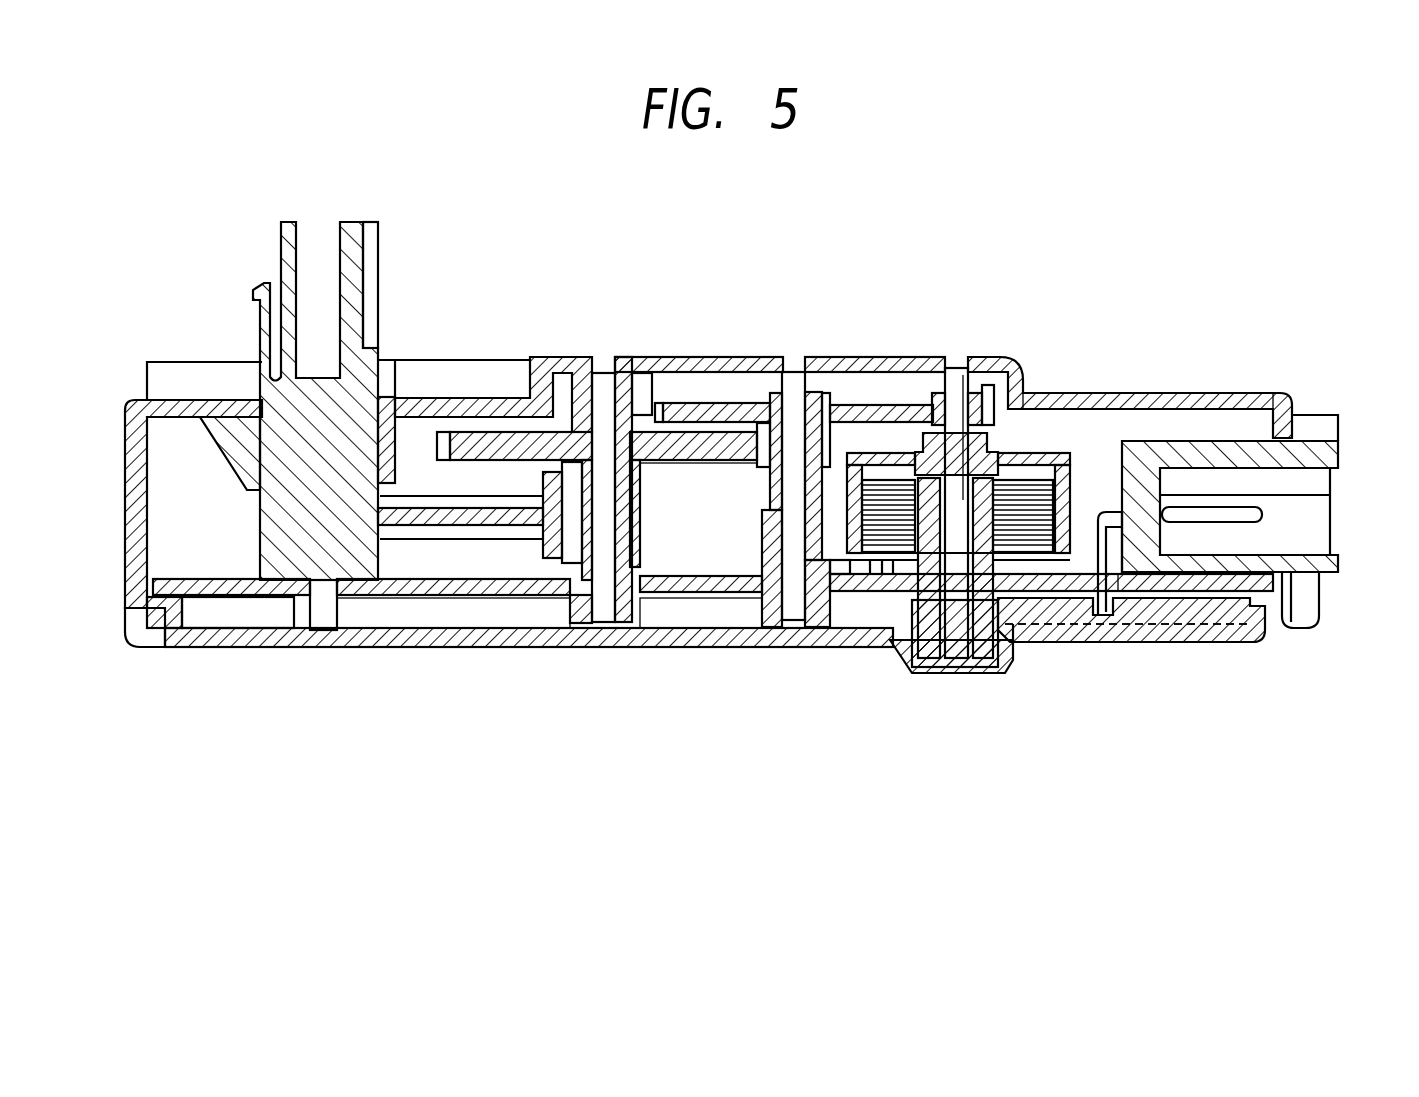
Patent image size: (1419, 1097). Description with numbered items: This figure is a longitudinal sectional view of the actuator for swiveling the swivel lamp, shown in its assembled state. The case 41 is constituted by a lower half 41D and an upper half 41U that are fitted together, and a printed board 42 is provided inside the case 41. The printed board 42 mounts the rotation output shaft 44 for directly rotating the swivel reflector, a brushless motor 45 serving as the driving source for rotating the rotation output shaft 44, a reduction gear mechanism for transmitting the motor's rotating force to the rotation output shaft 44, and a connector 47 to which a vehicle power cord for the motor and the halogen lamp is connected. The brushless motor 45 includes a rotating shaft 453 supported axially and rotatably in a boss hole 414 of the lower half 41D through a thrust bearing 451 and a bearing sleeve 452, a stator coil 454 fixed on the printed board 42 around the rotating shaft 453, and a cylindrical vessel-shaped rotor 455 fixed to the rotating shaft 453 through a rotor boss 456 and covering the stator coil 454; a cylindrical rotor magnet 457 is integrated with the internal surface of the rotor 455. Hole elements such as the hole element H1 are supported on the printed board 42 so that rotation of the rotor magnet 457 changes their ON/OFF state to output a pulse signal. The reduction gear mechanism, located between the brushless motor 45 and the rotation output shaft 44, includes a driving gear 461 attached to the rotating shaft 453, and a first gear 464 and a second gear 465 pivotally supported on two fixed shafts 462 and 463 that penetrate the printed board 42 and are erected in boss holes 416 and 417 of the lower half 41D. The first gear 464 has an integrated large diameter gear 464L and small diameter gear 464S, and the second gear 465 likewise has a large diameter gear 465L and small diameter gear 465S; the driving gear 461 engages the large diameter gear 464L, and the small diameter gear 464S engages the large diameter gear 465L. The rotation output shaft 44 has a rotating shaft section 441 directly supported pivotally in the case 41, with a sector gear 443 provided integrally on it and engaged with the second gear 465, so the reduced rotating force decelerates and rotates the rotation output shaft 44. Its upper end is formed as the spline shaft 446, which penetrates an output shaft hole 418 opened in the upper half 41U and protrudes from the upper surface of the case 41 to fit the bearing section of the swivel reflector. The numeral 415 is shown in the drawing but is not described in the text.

The case 41 is at (1300, 380).
The upper half 41U is at (1212, 392).
The lower half 41D is at (1262, 645).
The printed board 42 is at (690, 647).
The rotation output shaft 44 is at (268, 246).
The brushless motor 45 is at (1016, 518).
The connector 47 is at (1327, 452).
The boss hole 414 is at (897, 647).
The opening 415 is at (290, 647).
The boss hole 416 is at (758, 647).
The boss hole 417 is at (557, 647).
The output shaft hole 418 is at (386, 400).
The rotating shaft section 441 is at (265, 378).
The sector gear 443 is at (595, 366).
The spline shaft 446 is at (372, 285).
The thrust bearing 451 is at (972, 673).
The bearing sleeve 452 is at (1012, 655).
The rotating shaft 453 is at (948, 660).
The stator coil 454 is at (1141, 475).
The rotor 455 is at (925, 367).
The rotor boss 456 is at (1015, 400).
The rotor magnet 457 is at (840, 647).
The driving gear 461 is at (997, 370).
The fixed shaft 462 is at (728, 647).
The fixed shaft 463 is at (645, 368).
The first gear 464 is at (850, 357).
The large diameter gear 464L is at (745, 368).
The small diameter gear 464S is at (830, 368).
The second gear 465 is at (520, 368).
The large diameter gear 465L is at (717, 370).
The small diameter gear 465S is at (628, 645).
The hole element H1 is at (1082, 642).